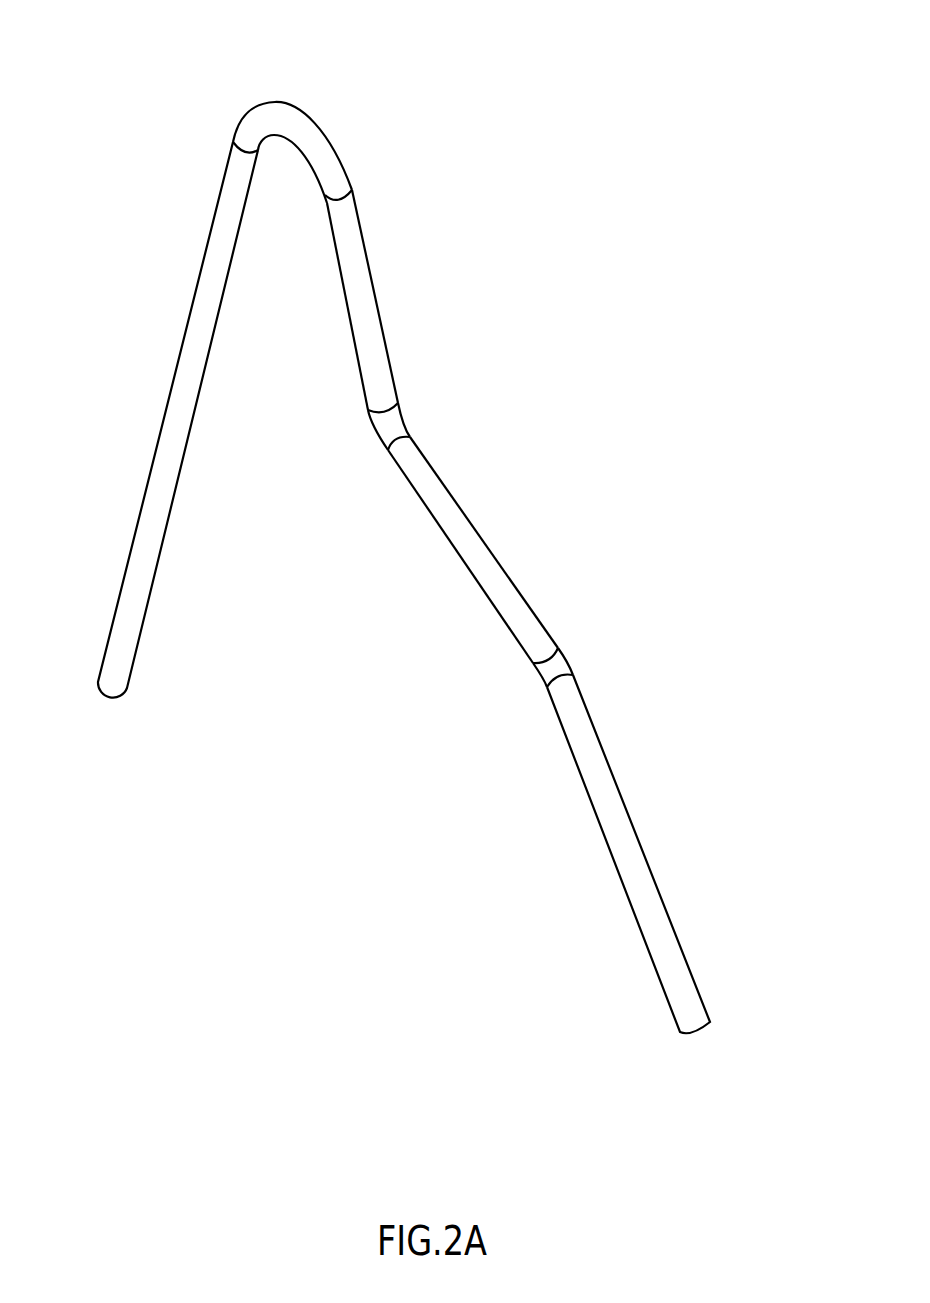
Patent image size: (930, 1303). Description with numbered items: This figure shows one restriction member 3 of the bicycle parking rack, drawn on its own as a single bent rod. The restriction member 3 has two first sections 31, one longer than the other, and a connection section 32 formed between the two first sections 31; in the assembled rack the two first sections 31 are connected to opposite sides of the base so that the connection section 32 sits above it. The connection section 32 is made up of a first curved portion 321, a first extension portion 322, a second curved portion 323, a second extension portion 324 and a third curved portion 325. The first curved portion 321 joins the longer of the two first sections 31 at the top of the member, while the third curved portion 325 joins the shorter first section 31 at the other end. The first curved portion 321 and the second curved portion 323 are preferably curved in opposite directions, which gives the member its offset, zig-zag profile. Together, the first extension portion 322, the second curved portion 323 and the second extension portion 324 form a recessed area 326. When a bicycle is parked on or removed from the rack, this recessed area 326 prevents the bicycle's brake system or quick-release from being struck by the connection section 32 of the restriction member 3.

The restriction member 3 is at (635, 337).
The first section 31 is at (190, 362).
The connection section 32 is at (453, 278).
The first curved portion 321 is at (312, 130).
The first extension portion 322 is at (353, 250).
The second curved portion 323 is at (380, 430).
The second extension portion 324 is at (480, 548).
The third curved portion 325 is at (547, 675).
The recessed area 326 is at (455, 387).